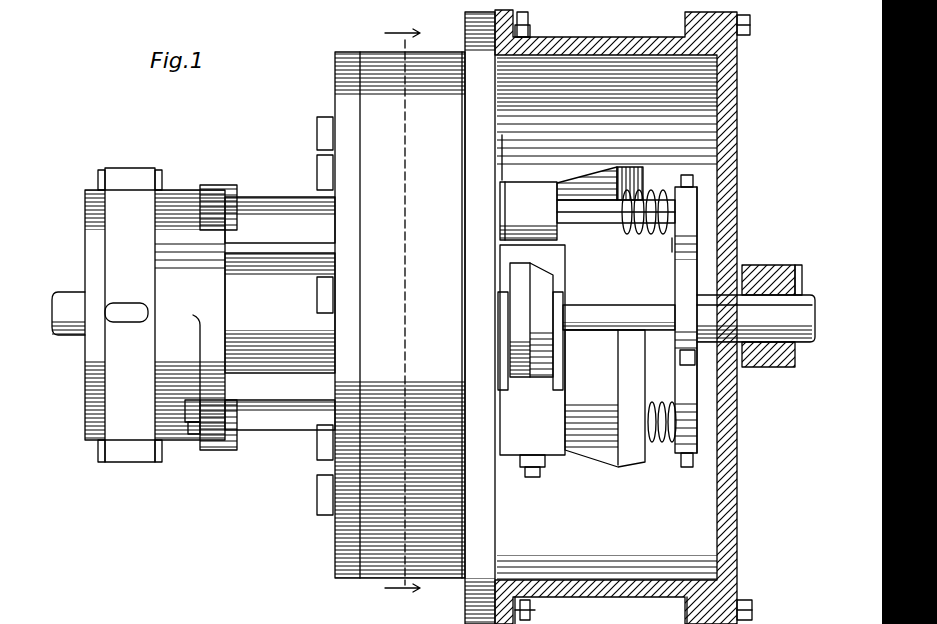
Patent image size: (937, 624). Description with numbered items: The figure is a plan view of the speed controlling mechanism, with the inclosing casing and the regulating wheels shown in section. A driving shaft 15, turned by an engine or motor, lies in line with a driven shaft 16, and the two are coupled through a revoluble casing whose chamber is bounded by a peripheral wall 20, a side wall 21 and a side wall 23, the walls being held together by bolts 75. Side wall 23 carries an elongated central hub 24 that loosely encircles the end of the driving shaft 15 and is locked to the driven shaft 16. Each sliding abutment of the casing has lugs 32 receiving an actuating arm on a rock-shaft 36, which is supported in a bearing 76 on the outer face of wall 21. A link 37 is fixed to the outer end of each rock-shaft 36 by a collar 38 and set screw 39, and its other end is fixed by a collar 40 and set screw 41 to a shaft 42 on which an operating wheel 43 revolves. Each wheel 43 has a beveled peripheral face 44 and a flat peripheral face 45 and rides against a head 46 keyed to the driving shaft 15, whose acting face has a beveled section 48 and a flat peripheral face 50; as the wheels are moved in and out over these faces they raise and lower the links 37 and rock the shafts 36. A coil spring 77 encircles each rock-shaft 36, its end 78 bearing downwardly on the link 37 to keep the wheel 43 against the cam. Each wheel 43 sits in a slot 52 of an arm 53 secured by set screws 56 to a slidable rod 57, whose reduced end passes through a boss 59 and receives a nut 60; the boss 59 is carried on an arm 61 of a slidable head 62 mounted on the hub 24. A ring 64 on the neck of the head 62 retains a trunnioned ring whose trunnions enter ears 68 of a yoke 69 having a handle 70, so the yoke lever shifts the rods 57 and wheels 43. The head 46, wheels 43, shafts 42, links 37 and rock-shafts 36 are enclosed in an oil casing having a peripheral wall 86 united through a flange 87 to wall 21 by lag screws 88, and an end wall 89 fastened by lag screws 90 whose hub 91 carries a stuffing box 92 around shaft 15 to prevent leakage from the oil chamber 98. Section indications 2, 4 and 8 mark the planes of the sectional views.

The section line 2- 2 is at (402, 309).
The section line 4 is at (427, 604).
The section line 8- 8 is at (503, 326).
The driving shaft 15 is at (756, 318).
The driven shaft 16 is at (68, 313).
The peripheral wall 20 is at (400, 315).
The side wall 21 is at (480, 318).
The side wall 23 is at (352, 315).
The elongated central hub 24 is at (280, 313).
The lugs 32 is at (396, 614).
The rock-shaft 36 is at (630, 185).
The link 37 is at (748, 417).
The collar 38 is at (690, 207).
The set screw 39 is at (693, 180).
The collar 40 is at (700, 295).
The set screw 41 is at (695, 365).
The shaft 42 is at (619, 318).
The operating wheel 43 is at (555, 290).
The beveled peripheral face 44 is at (540, 285).
The flat peripheral face 45 is at (525, 280).
The head 46 is at (650, 404).
The beveled section 48 is at (590, 465).
The flat peripheral face 50 is at (675, 322).
The slot 52 is at (553, 372).
The arm 53 is at (531, 350).
The set screws 56 is at (535, 478).
The slidable rod 57 is at (315, 212).
The boss 59 is at (237, 190).
The nut 60 is at (195, 436).
The arm 61 is at (220, 380).
The slidable head 62 is at (181, 345).
The ring 64 is at (85, 272).
The ears 68 is at (162, 178).
The yoke 69 is at (130, 315).
The handle 70 is at (124, 305).
The bolts 75 is at (317, 138).
The bearing 76 is at (587, 211).
The coil spring 77 is at (650, 198).
The spring end 78 is at (672, 238).
The peripheral wall 86 is at (601, 317).
The flange 87 is at (528, 14).
The lag screws 88 is at (532, 30).
The end wall 89 is at (737, 125).
The lag screws 90 is at (750, 35).
The hub 91 is at (770, 272).
The stuffing box 92 is at (807, 274).
The chamber 98 is at (607, 318).